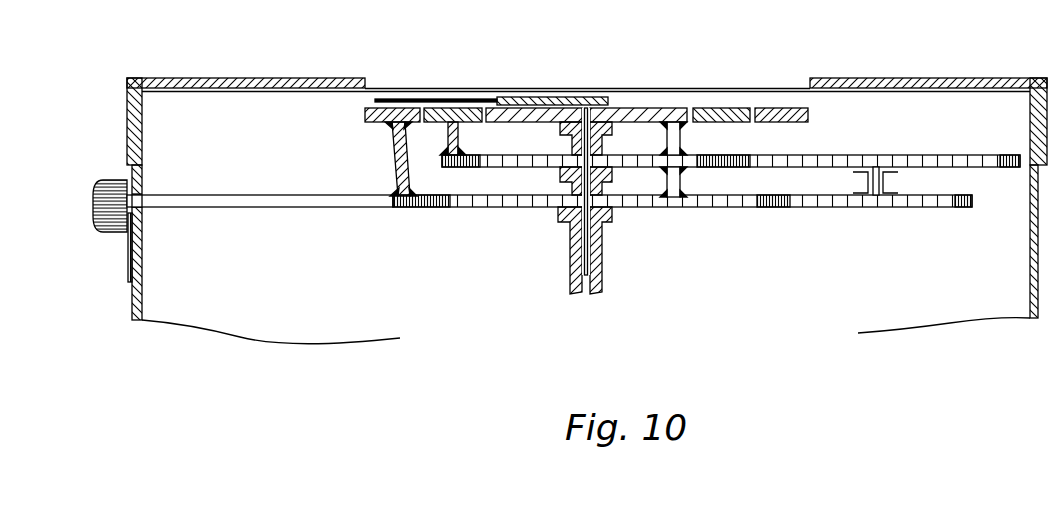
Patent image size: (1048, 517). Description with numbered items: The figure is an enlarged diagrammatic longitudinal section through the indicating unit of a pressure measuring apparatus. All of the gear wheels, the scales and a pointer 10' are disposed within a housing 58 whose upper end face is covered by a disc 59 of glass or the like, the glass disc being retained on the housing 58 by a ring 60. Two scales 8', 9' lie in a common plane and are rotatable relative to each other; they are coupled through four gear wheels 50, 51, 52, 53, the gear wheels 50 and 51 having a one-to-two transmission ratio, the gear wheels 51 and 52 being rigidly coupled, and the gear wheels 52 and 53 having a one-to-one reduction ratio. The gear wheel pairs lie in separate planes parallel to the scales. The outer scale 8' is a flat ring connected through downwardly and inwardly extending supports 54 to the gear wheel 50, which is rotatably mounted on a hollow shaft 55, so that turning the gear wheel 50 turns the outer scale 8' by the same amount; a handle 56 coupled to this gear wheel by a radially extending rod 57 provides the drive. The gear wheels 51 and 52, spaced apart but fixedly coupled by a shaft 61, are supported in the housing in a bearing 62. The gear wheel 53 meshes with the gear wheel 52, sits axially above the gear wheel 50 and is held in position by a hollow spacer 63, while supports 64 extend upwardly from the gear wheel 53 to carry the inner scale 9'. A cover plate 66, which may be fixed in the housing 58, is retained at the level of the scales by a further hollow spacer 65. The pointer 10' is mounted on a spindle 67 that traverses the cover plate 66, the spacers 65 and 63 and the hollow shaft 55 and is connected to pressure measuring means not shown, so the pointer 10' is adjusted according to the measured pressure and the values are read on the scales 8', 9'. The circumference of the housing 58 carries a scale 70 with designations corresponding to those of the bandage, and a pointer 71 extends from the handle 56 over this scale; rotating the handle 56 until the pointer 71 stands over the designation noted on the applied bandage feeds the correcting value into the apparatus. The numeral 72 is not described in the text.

The ring 60 is at (200, 78).
The scale 70 is at (130, 282).
The pointer 71 is at (128, 243).
The housing 58 is at (1033, 230).
The handle 56 is at (110, 182).
The rod 57 is at (236, 197).
The wall aperture 72 is at (147, 193).
The gear wheel 50 is at (471, 207).
The gear wheel 51 is at (836, 207).
The gear wheel 53 is at (521, 160).
The gear wheel 52 is at (856, 160).
The support 54 is at (398, 156).
The support 64 is at (458, 140).
The scale 8' is at (556, 69).
The scale 9' is at (722, 69).
The cover plate 66 is at (641, 108).
The disc 59 is at (559, 97).
The pointer 10' is at (436, 68).
The hollow spacer 65 is at (598, 140).
The hollow spacer 63 is at (598, 185).
The hollow shaft 55 is at (598, 256).
The spindle 67 is at (584, 250).
The bearing 62 is at (866, 173).
The shaft 61 is at (876, 207).